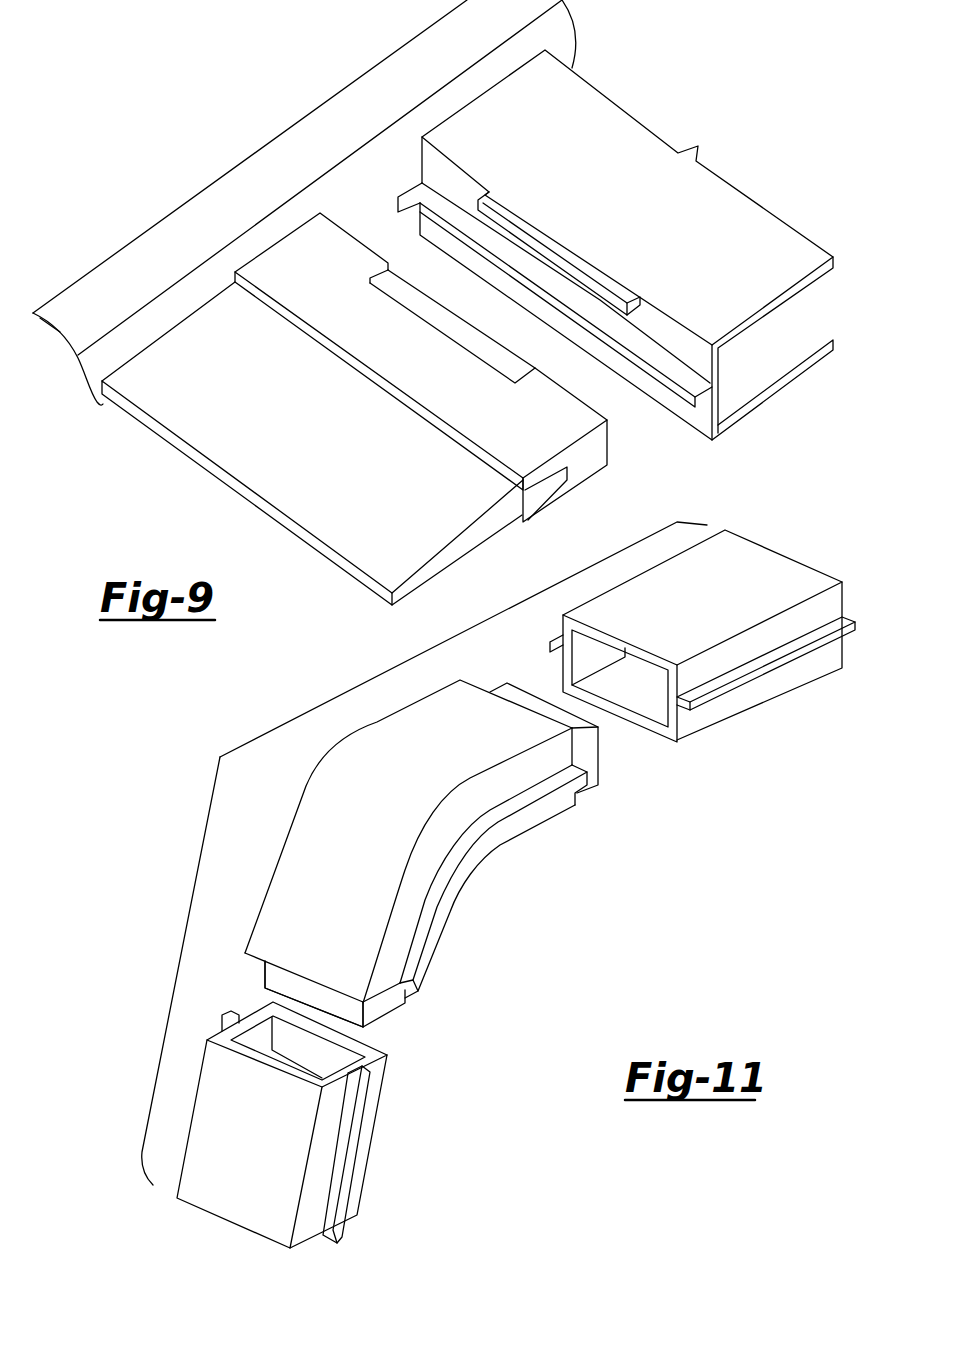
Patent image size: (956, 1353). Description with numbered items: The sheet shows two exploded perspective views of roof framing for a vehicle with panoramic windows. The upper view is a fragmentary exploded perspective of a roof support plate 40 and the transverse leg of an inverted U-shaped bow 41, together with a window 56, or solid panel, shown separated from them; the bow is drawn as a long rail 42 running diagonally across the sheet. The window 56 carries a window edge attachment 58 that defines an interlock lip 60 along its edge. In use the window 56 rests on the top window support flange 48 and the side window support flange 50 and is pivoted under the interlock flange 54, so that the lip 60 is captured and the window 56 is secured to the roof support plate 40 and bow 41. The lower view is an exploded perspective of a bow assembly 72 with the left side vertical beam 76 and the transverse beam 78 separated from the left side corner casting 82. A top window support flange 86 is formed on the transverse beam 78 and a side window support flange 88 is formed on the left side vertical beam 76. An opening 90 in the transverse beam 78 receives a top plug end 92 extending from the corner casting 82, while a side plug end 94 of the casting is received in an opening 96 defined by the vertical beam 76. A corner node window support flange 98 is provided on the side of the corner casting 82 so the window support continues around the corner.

In FIG. 9, the roof support plate 40 is at (750, 215).
In FIG. 9, the inverted U-shaped bow 41 is at (128, 236).
In FIG. 9, the rail 42 is at (238, 195).
In FIG. 9, the top window support flange 48 is at (660, 367).
In FIG. 9, the side window support flange 50 is at (397, 210).
In FIG. 9, the interlock flange 54 is at (563, 270).
In FIG. 9, the window 56 is at (223, 438).
In FIG. 9, the window edge attachment 58 is at (537, 450).
In FIG. 9, the interlock lip 60 is at (438, 322).
In FIG. 11, the bow assembly 72 is at (218, 757).
In FIG. 11, the left side vertical beam 76 is at (218, 1193).
In FIG. 11, the transverse beam 78 is at (757, 575).
In FIG. 11, the left side corner casting 82 is at (315, 810).
In FIG. 11, the top window support flange 86 is at (753, 663).
In FIG. 11, the side window support flange 88 is at (345, 1137).
In FIG. 11, the opening 90 is at (637, 700).
In FIG. 11, the top plug end 92 is at (600, 765).
In FIG. 11, the side plug end 94 is at (378, 1003).
In FIG. 11, the opening 96 is at (308, 1053).
In FIG. 11, the corner node window support flange 98 is at (457, 843).